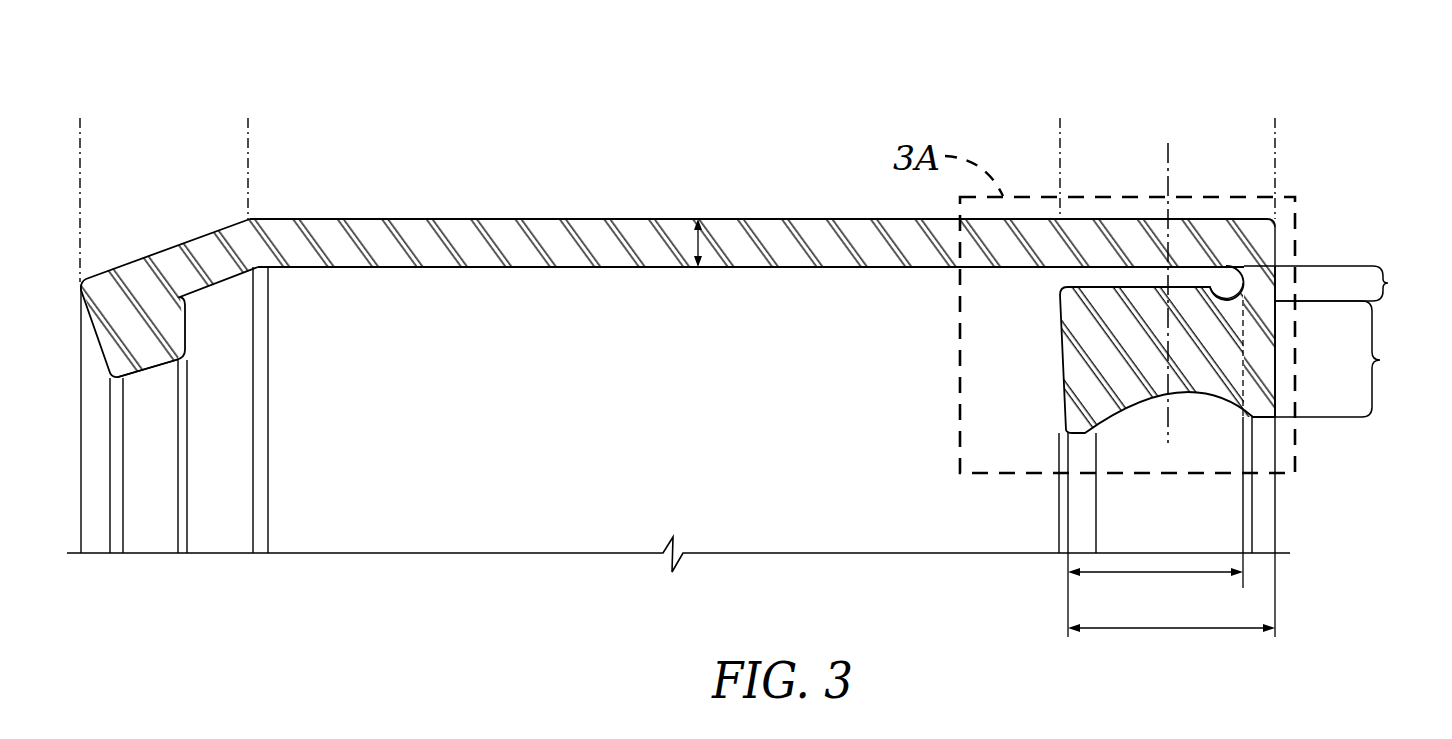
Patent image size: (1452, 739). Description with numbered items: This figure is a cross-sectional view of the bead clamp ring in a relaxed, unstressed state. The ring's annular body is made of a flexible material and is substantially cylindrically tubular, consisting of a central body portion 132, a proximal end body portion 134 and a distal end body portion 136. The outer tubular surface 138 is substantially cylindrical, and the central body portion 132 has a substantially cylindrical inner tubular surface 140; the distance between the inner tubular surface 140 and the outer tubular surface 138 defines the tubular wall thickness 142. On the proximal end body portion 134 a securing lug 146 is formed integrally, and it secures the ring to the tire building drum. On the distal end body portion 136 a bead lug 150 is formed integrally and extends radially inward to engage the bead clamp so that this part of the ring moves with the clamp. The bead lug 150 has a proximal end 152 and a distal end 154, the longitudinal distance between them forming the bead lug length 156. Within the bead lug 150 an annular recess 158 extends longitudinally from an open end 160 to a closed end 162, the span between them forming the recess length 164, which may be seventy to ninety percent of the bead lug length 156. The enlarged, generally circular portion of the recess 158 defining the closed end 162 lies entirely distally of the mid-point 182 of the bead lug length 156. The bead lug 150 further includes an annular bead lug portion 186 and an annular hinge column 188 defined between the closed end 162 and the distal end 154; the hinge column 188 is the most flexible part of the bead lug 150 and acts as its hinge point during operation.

The central body portion 132 is at (250, 112).
The proximal end body portion 134 is at (80, 122).
The distal end body portion 136 is at (1060, 122).
The outer tubular surface 138 is at (413, 219).
The inner tubular surface 140 is at (448, 268).
The tubular wall thickness 142 is at (698, 241).
The securing lug 146 is at (145, 370).
The bead lug 150 is at (931, 465).
The proximal end 152 is at (1064, 393).
The distal end 154 is at (1275, 345).
The bead lug length 156 is at (1142, 630).
The annular recess 158 is at (1195, 286).
The open end 160 is at (1130, 274).
The closed end 162 is at (1245, 283).
The recess length 164 is at (1142, 574).
The mid-point 182 is at (1167, 143).
The annular bead lug portion 186 is at (1380, 360).
The annular hinge column 188 is at (1388, 283).